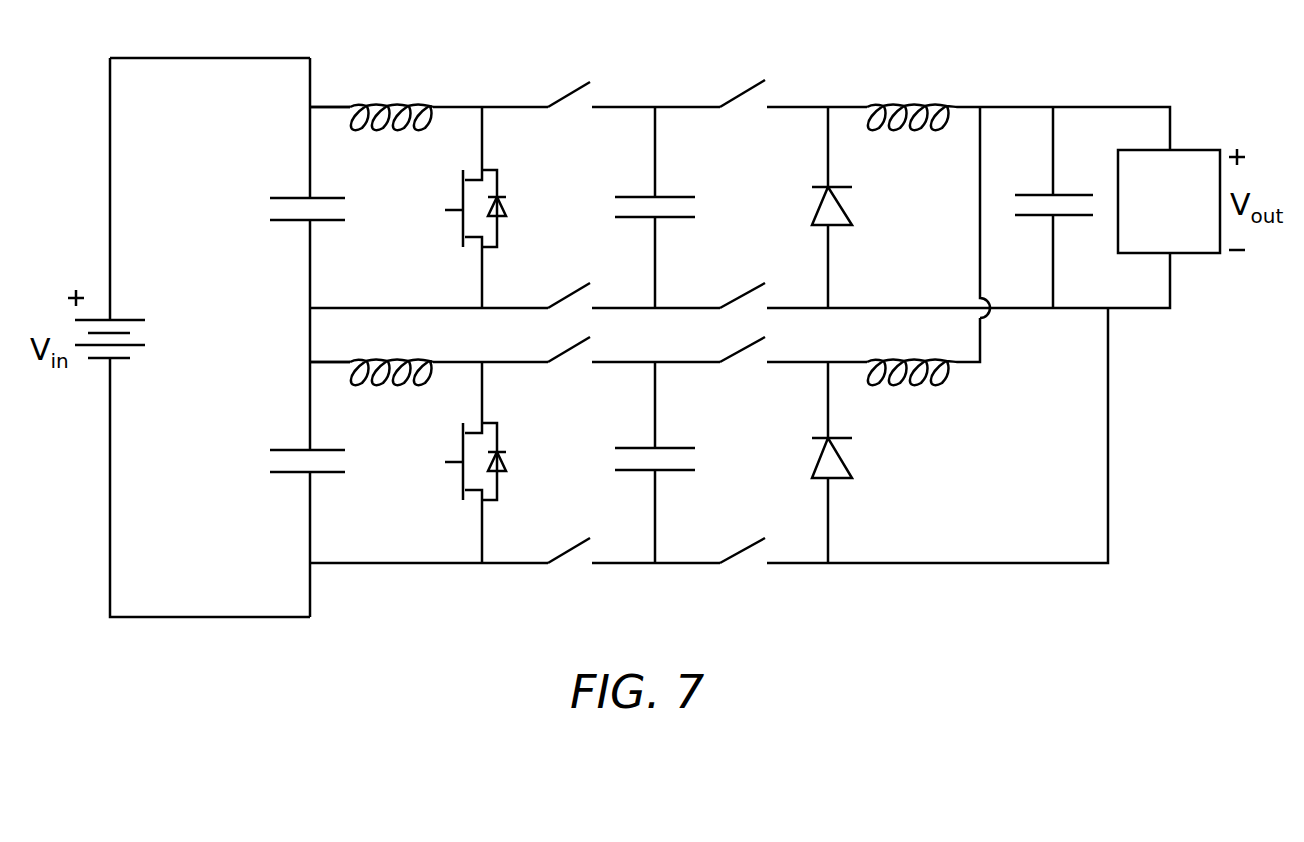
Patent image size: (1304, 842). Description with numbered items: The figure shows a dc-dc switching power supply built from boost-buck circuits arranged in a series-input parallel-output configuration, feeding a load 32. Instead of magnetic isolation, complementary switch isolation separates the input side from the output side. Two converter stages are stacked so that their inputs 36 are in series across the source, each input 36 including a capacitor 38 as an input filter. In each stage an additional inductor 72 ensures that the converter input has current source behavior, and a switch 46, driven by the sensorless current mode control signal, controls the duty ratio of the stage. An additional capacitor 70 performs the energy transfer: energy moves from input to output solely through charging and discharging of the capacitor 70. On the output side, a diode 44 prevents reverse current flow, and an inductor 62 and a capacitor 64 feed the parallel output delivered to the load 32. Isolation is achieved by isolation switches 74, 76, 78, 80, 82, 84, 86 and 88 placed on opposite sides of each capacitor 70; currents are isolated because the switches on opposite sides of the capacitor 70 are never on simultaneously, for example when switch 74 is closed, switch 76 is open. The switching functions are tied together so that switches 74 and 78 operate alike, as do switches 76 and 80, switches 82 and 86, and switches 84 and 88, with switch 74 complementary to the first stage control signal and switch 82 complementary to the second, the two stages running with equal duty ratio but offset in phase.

The load 32 is at (1195, 150).
The input 36 is at (310, 107).
The capacitor 38 is at (290, 198).
The diode 44 is at (846, 210).
The switch 46 is at (500, 157).
The output inductor 62 is at (920, 105).
The output capacitor 64 is at (1075, 194).
The capacitor 70 is at (676, 197).
The inductor 72 is at (398, 106).
The isolation switch 74 is at (582, 93).
The isolation switch 76 is at (755, 93).
The isolation switch 78 is at (562, 298).
The isolation switch 80 is at (735, 298).
The isolation switch 82 is at (582, 346).
The isolation switch 84 is at (755, 346).
The isolation switch 86 is at (562, 552).
The isolation switch 88 is at (735, 552).